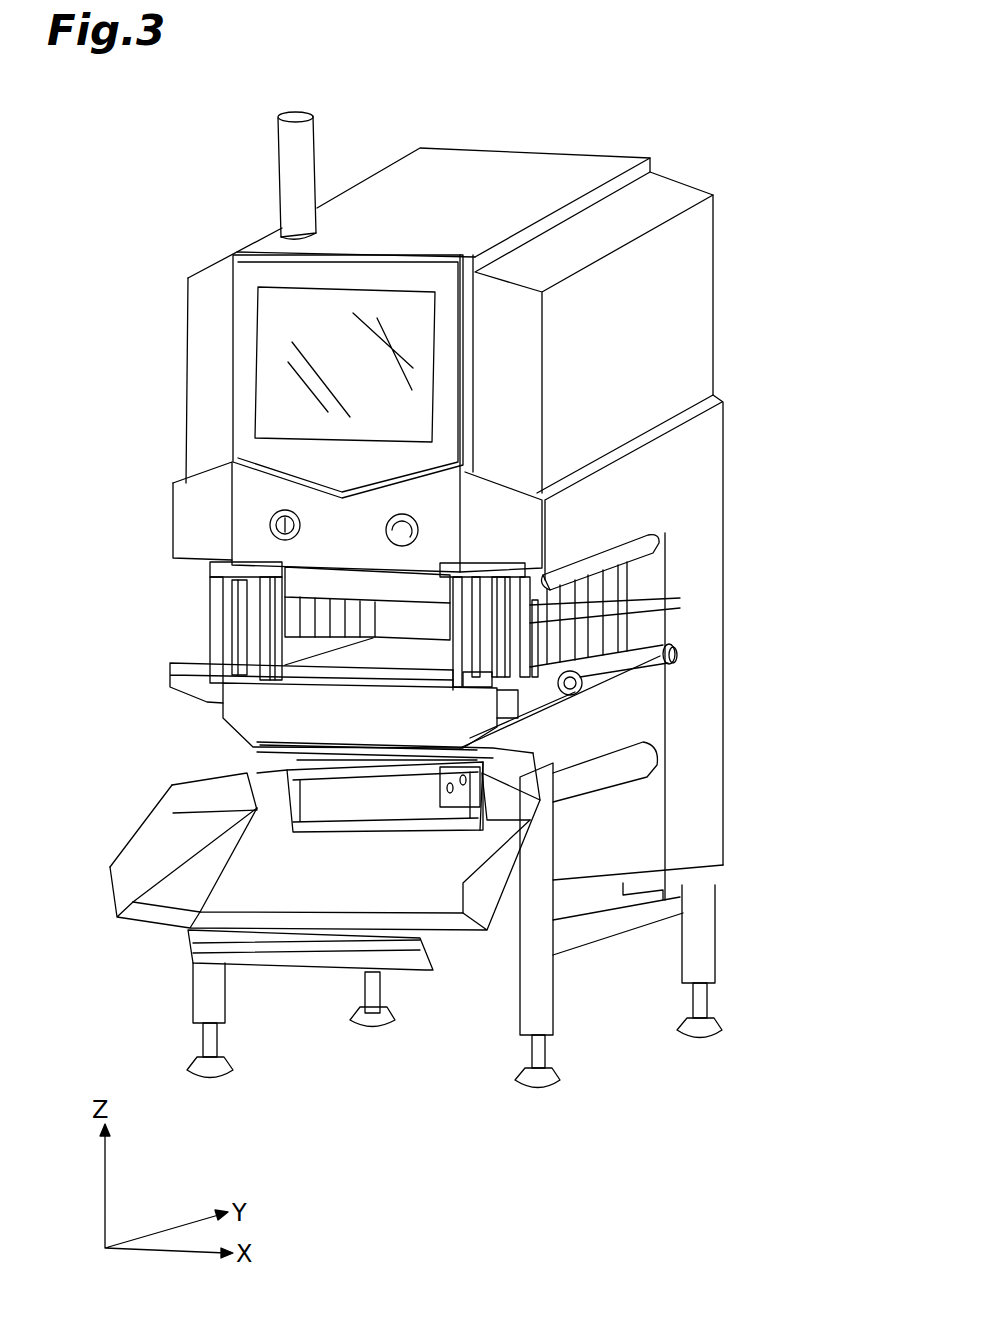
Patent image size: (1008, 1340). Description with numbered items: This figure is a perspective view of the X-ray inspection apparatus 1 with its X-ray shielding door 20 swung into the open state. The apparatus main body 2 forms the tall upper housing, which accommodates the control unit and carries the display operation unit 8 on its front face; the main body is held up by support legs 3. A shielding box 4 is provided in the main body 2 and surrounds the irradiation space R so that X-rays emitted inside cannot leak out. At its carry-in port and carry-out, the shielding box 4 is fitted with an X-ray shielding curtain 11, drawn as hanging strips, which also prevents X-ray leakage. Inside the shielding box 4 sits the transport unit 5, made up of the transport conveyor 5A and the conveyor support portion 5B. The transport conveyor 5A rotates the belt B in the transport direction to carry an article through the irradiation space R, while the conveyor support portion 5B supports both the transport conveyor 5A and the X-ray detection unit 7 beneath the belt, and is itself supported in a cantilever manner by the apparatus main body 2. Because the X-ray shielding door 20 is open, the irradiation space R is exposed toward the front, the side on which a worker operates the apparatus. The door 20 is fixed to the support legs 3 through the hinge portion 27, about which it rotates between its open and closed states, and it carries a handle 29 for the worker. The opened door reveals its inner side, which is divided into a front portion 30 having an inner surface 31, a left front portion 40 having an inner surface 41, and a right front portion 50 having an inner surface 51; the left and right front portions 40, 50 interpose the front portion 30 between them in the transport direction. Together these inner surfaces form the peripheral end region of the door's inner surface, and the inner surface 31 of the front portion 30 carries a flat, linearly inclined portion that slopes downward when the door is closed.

The X-ray inspection apparatus 1 is at (163, 184).
The apparatus main body 2 is at (463, 192).
The support legs 3 is at (705, 957).
The shielding box 4 is at (615, 525).
The transport unit 5 is at (856, 632).
The transport conveyor 5A is at (667, 647).
The conveyor support portion 5B is at (500, 735).
The belt B is at (627, 673).
The X-ray detection unit 7 is at (360, 693).
The display operation unit 8 is at (283, 324).
The X-ray shielding curtain 11 is at (277, 643).
The X-ray shielding door 20 is at (141, 933).
The hinge portion 27 is at (470, 760).
The handle 29 is at (305, 963).
The front portion 30 is at (352, 874).
The inner surface 31 is at (387, 893).
The left front portion 40 is at (206, 864).
The inner surface 41 is at (140, 832).
The right front portion 50 is at (484, 868).
The inner surface 51 is at (475, 822).
The irradiation space R is at (421, 634).